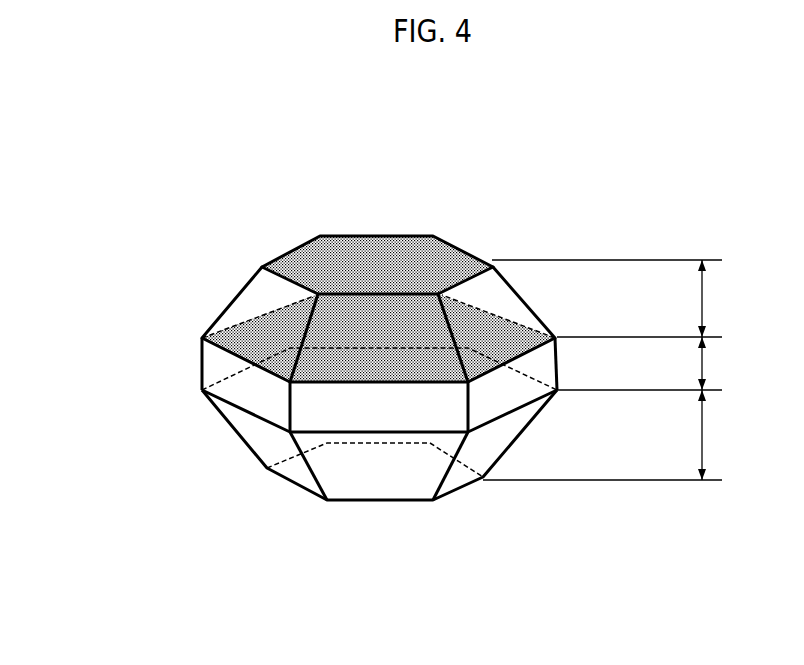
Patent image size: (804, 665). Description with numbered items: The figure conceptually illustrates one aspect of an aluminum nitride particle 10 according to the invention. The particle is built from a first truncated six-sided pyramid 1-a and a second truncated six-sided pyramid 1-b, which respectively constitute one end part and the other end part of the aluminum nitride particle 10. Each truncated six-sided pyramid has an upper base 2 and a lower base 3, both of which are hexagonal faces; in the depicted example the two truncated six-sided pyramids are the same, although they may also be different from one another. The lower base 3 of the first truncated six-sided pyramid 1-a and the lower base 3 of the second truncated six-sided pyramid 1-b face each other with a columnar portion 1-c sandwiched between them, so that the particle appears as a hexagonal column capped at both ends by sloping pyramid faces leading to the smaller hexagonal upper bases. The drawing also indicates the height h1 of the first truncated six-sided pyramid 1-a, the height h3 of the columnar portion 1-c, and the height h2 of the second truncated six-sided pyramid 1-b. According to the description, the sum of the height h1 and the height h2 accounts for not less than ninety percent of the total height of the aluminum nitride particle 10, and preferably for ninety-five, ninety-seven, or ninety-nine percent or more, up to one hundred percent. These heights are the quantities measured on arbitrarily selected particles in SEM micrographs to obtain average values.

The aluminum nitride particle 10 is at (352, 361).
The first truncated six-sided pyramid 1-a is at (328, 262).
The second truncated six-sided pyramid 1-b is at (373, 480).
The columnar portion 1-c is at (220, 362).
The upper base 2 is at (430, 265).
The lower base 3 is at (352, 353).
The height of the first truncated six-sided pyramid h1 is at (629, 298).
The height of the columnar portion h3 is at (664, 363).
The height of the second truncated six-sided pyramid h2 is at (627, 435).